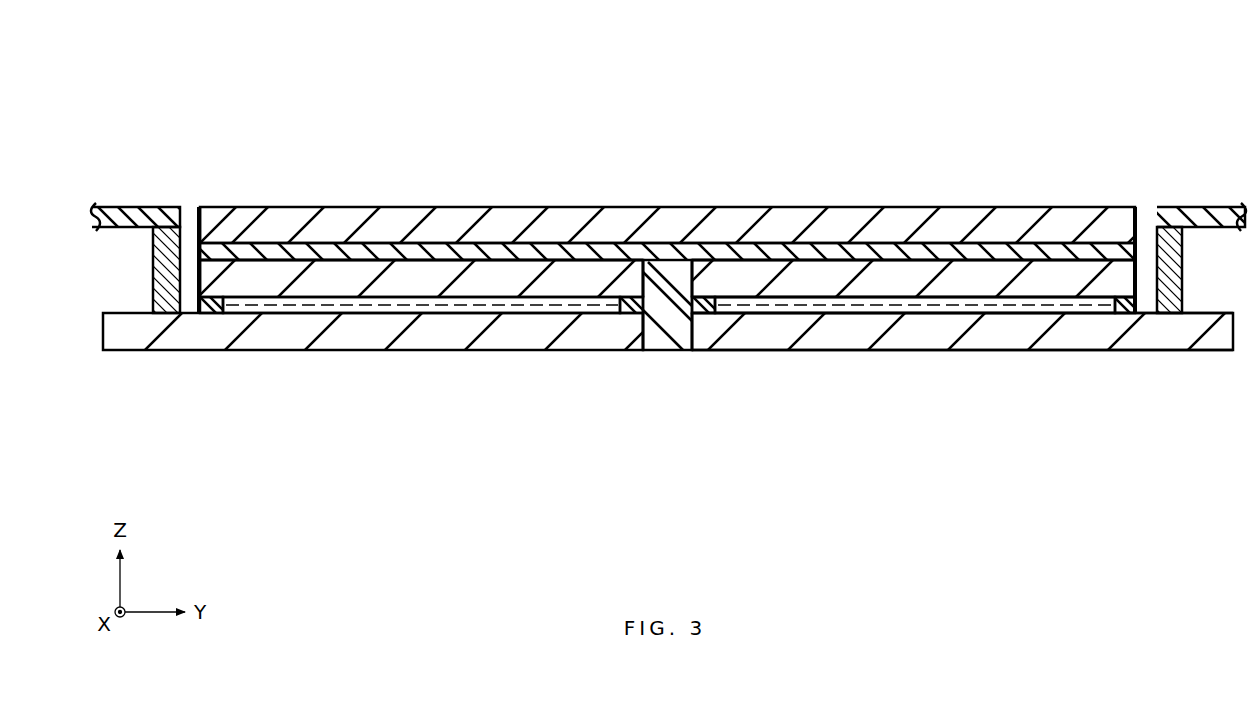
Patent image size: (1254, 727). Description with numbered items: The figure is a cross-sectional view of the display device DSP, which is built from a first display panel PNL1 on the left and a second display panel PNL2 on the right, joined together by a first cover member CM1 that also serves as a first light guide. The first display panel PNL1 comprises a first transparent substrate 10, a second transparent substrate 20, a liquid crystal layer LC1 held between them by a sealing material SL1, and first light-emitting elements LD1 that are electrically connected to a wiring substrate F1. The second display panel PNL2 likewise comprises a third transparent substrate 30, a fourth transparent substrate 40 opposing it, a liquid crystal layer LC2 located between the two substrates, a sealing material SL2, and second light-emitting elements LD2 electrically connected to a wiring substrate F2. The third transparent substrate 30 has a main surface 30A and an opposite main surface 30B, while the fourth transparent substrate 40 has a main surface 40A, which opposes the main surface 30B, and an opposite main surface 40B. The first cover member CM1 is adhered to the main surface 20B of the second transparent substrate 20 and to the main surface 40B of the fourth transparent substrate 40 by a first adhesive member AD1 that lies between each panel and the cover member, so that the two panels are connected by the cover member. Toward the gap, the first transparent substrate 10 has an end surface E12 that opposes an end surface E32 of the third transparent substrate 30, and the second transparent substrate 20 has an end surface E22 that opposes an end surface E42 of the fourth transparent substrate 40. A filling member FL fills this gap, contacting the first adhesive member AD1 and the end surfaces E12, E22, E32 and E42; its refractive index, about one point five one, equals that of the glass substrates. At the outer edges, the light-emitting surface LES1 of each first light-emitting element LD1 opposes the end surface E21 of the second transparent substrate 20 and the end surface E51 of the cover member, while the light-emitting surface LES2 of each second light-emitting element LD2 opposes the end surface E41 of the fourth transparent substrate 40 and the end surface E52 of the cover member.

The display device DSP is at (1018, 110).
The first display panel PNL1 is at (115, 418).
The second display panel PNL2 is at (1225, 418).
The first transparent substrate 10 is at (153, 333).
The second transparent substrate 20 is at (340, 287).
The third transparent substrate 30 is at (1167, 333).
The fourth transparent substrate 40 is at (928, 277).
The liquid crystal layer LC1 is at (482, 303).
The liquid crystal layer LC2 is at (793, 303).
The sealing material SL1 is at (627, 305).
The sealing material SL2 is at (708, 303).
The filling member FL is at (671, 318).
The first cover member CM1 is at (357, 213).
The first adhesive member AD1 is at (493, 250).
The main surface 20B is at (553, 257).
The main surface 40A is at (957, 300).
The main surface 40B is at (988, 260).
The main surface 30A is at (1006, 355).
The main surface 30B is at (1037, 300).
The end surface E12 is at (646, 322).
The end surface E21 is at (202, 276).
The end surface E22 is at (647, 275).
The end surface E32 is at (690, 322).
The end surface E41 is at (1133, 273).
The end surface E42 is at (690, 275).
The end surface E51 is at (199, 210).
The end surface E52 is at (1137, 215).
The light-emitting surface LES1 is at (200, 247).
The light-emitting surface LES2 is at (1135, 240).
The first light-emitting element LD1 is at (167, 240).
The second light-emitting element LD2 is at (1170, 240).
The wiring substrate F1 is at (132, 210).
The wiring substrate F2 is at (1220, 220).